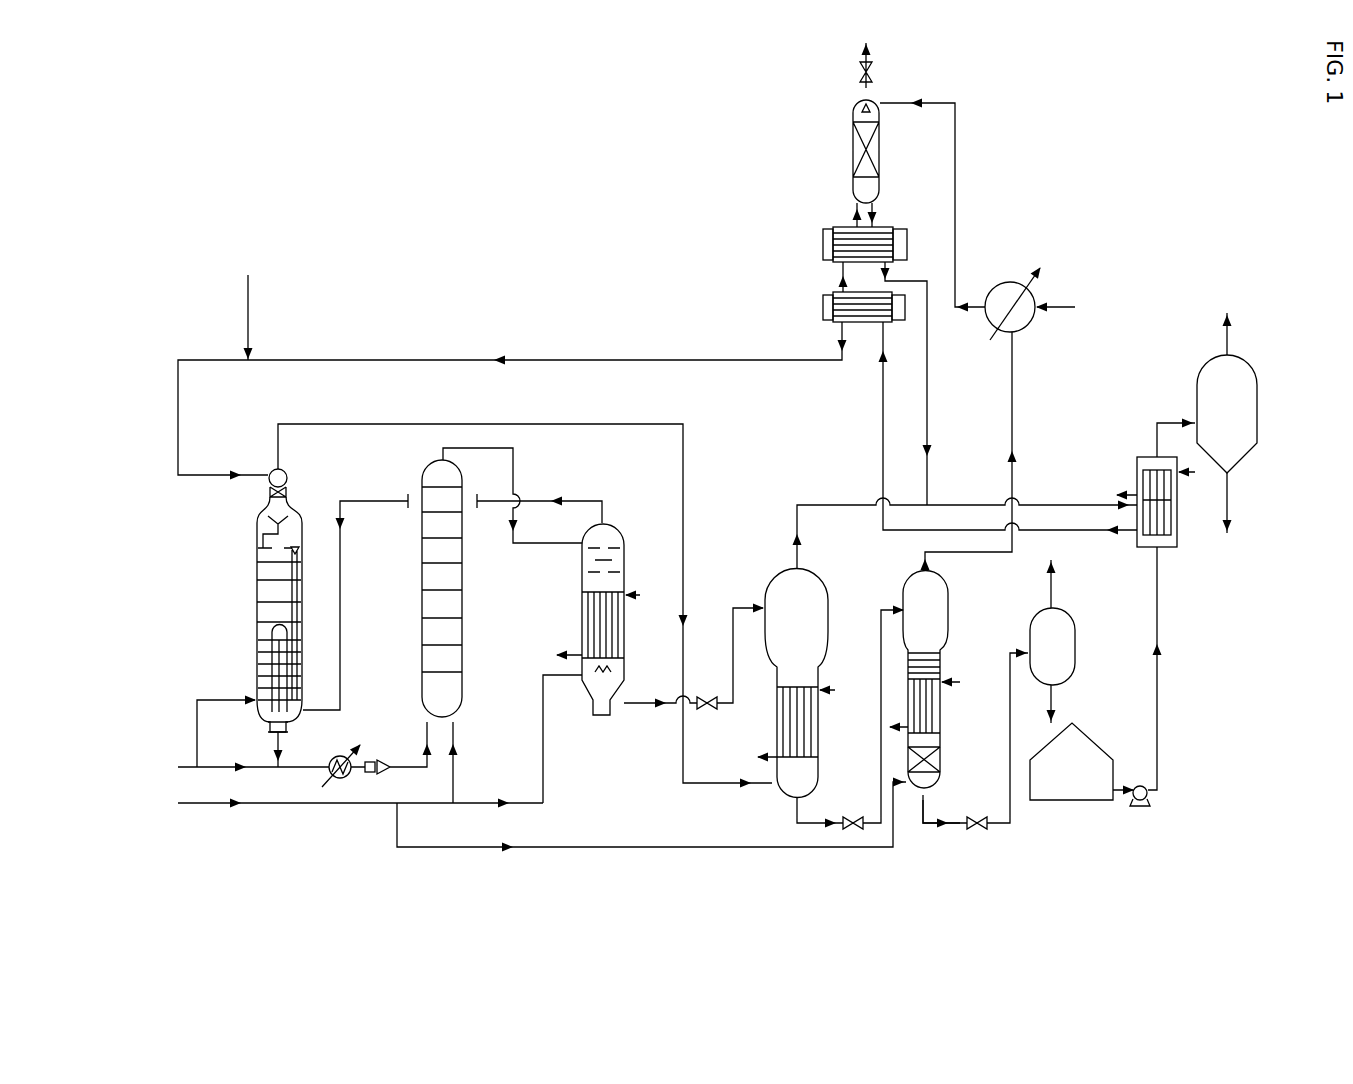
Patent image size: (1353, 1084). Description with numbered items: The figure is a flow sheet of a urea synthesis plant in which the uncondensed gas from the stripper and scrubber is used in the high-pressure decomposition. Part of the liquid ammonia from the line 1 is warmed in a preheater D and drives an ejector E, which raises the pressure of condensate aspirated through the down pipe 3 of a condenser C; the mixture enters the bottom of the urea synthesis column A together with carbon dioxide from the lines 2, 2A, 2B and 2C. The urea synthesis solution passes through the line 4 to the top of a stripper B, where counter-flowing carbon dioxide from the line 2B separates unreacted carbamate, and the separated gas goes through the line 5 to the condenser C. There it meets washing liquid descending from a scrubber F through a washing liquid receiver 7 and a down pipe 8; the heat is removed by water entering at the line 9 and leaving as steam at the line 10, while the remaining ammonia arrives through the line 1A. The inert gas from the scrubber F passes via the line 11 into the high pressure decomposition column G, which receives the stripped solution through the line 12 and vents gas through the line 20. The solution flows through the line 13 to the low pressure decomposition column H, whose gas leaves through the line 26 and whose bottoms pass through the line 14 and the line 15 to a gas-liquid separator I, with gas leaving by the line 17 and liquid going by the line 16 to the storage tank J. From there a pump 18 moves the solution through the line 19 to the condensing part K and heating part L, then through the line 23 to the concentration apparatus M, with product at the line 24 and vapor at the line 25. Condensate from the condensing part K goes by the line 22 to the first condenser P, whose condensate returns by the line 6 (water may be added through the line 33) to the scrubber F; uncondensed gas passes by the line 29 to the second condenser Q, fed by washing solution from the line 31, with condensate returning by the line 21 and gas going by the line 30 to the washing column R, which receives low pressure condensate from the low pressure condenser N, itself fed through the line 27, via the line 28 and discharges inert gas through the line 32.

The liquid ammonia line 1 is at (178, 767).
The liquid ammonia branch line 1A is at (220, 700).
The carbon dioxide line 2 is at (218, 803).
The carbon dioxide line to synthesis column 2A is at (456, 782).
The carbon dioxide line to stripper 2B is at (548, 760).
The carbon dioxide line to low pressure decomposition column 2C is at (615, 847).
The down pipe 3 is at (295, 630).
The urea synthesis solution line 4 is at (513, 472).
The separated gas line 5 is at (540, 501).
The condensate line to scrubber 6 is at (365, 360).
The washing liquid receiver 7 is at (262, 522).
The down pipe 8 is at (257, 563).
The water inlet line 9 is at (270, 735).
The steam discharge line 10 is at (284, 740).
The inert gas line 11 is at (412, 424).
The stripped solution line 12 is at (640, 705).
The solution line 13 is at (795, 810).
The aqueous urea solution discharge line 14 is at (933, 825).
The line to gas-liquid separator 15 is at (1006, 697).
The line to storage tank 16 is at (1053, 705).
The gas discharge line 17 is at (1053, 595).
The pump 18 is at (1145, 808).
The aqueous urea solution line 19 is at (1159, 672).
The gas mixture line 20 is at (845, 508).
The condensate line 21 is at (929, 398).
The line to first condenser 22 is at (1080, 532).
The line to concentration apparatus 23 is at (1157, 423).
The concentrated urea solution line 24 is at (1229, 510).
The evaporated steam line 25 is at (1229, 340).
The gas discharge line 26 is at (1014, 422).
The ammonium carbonate solution line 27 is at (1068, 305).
The low pressure condensate line 28 is at (957, 200).
The uncondensed gas line 29 is at (841, 275).
The gas line to washing column 30 is at (855, 212).
The high pressure washing solution line 31 is at (874, 215).
The inert gas discharge line 32 is at (868, 60).
The water line 33 is at (246, 313).
The urea synthesis column A is at (465, 605).
The stripper B is at (626, 572).
The condenser C is at (302, 590).
The preheater D is at (329, 770).
The ejector E is at (378, 773).
The scrubber F is at (288, 483).
The high pressure decomposition column G is at (828, 628).
The low pressure decomposition column H is at (948, 612).
The gas-liquid separator I is at (1077, 652).
The aqueous urea solution storage tank J is at (1090, 738).
The condensing part K is at (1178, 520).
The heating part L is at (1135, 478).
The concentration apparatus M is at (1258, 410).
The low pressure condenser N is at (1030, 328).
The first condenser P is at (823, 310).
The second condenser Q is at (823, 240).
The washing column R is at (852, 138).